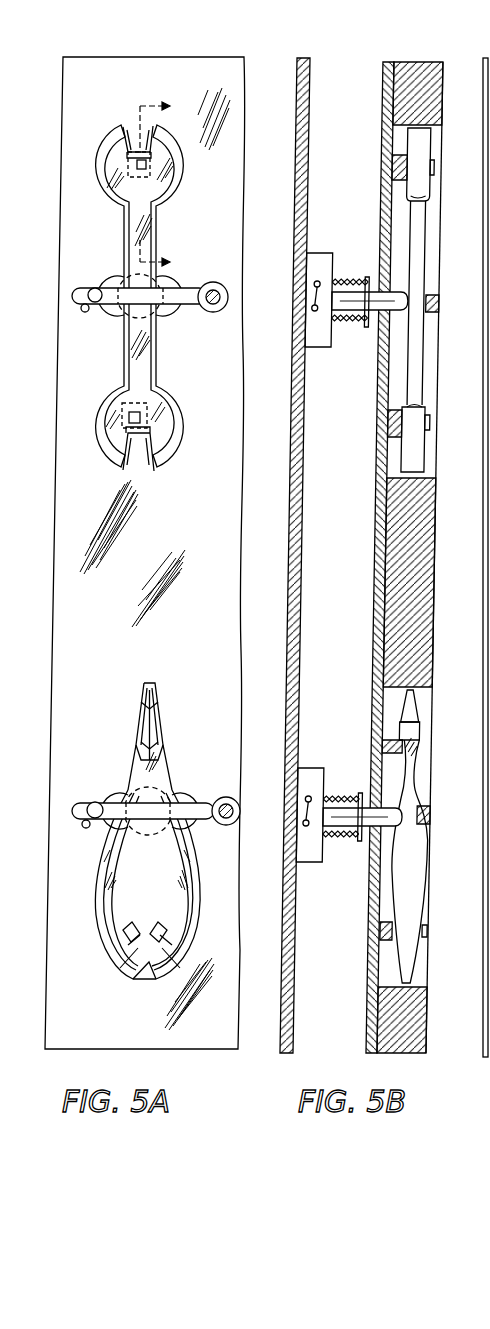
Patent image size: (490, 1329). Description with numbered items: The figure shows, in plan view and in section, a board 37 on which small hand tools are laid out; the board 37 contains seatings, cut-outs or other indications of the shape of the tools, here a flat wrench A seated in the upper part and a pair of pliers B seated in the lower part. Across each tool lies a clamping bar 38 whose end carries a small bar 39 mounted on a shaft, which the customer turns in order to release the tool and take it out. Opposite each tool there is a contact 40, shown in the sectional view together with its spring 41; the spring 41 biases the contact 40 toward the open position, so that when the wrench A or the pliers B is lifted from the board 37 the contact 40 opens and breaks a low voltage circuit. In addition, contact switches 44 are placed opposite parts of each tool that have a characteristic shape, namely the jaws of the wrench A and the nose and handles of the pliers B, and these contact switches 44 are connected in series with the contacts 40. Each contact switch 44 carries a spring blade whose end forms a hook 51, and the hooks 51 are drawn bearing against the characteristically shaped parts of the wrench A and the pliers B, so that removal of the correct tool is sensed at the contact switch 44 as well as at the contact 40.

In FIG. 5A, the board 37 is at (95, 73).
In FIG. 5B, the board 37 is at (386, 80).
In FIG. 5A, the clamping bar 38 is at (173, 300).
In FIG. 5B, the clamping bar 38 is at (440, 296).
In FIG. 5A, the small bar 39 is at (213, 312).
In FIG. 5B, the contact 40 is at (333, 283).
In FIG. 5B, the spring 41 is at (345, 325).
In FIG. 5A, the contact switch 44 is at (130, 147).
In FIG. 5B, the contact switch 44 is at (395, 178).
In FIG. 5A, the hook 51 is at (147, 165).
In FIG. 5B, the hook 51 is at (433, 168).
In FIG. 5A, the flat wrench A is at (108, 173).
In FIG. 5B, the flat wrench A is at (415, 185).
In FIG. 5A, the pair of pliers B is at (140, 760).
In FIG. 5B, the pair of pliers B is at (410, 730).